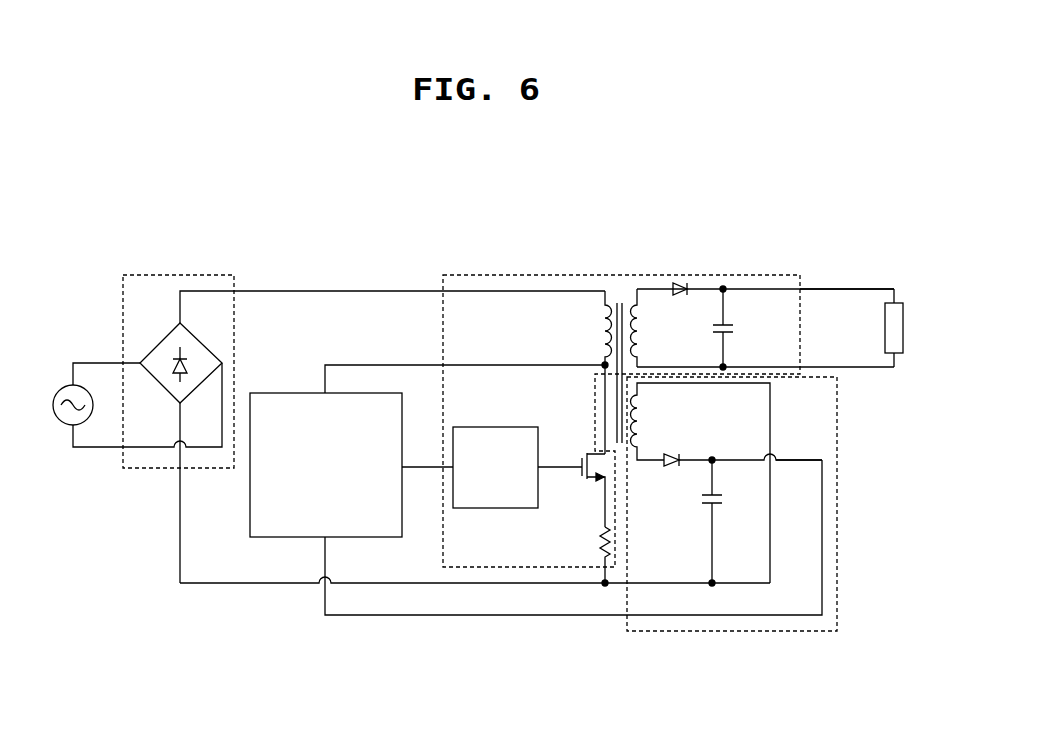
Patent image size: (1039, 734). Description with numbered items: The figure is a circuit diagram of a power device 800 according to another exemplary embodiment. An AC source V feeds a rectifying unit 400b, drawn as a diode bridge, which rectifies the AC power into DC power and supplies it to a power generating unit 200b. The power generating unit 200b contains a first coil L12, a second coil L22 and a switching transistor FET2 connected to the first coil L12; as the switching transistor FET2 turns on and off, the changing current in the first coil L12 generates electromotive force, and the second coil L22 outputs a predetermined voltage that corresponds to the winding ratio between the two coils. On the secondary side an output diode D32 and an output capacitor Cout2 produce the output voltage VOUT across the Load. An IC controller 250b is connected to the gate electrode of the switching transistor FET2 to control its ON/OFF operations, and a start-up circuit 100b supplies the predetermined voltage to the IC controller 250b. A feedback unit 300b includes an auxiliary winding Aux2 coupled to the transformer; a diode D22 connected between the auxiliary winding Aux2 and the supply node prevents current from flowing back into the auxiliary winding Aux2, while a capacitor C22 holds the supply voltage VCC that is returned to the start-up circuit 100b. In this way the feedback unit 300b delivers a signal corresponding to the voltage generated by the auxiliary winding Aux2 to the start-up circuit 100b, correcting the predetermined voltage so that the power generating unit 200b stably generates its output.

The power device 800 is at (90, 198).
The rectifying unit 400b is at (175, 273).
The start-up circuit 100b is at (312, 392).
The IC controller 250b is at (497, 425).
The power generating unit 200b is at (668, 430).
The feedback unit 300b is at (732, 532).
The first coil L12 is at (592, 372).
The second coil L22 is at (763, 328).
The auxiliary winding Aux2 is at (701, 483).
The switching transistor FET2 is at (577, 519).
The output diode D32 is at (681, 305).
The diode D22 is at (735, 476).
The output capacitor Cout2 is at (755, 328).
The auxiliary capacitor C22 is at (732, 521).
The output voltage VOUT is at (847, 279).
The supply voltage VCC is at (801, 447).
The load Load is at (866, 328).
The AC input source V is at (137, 405).